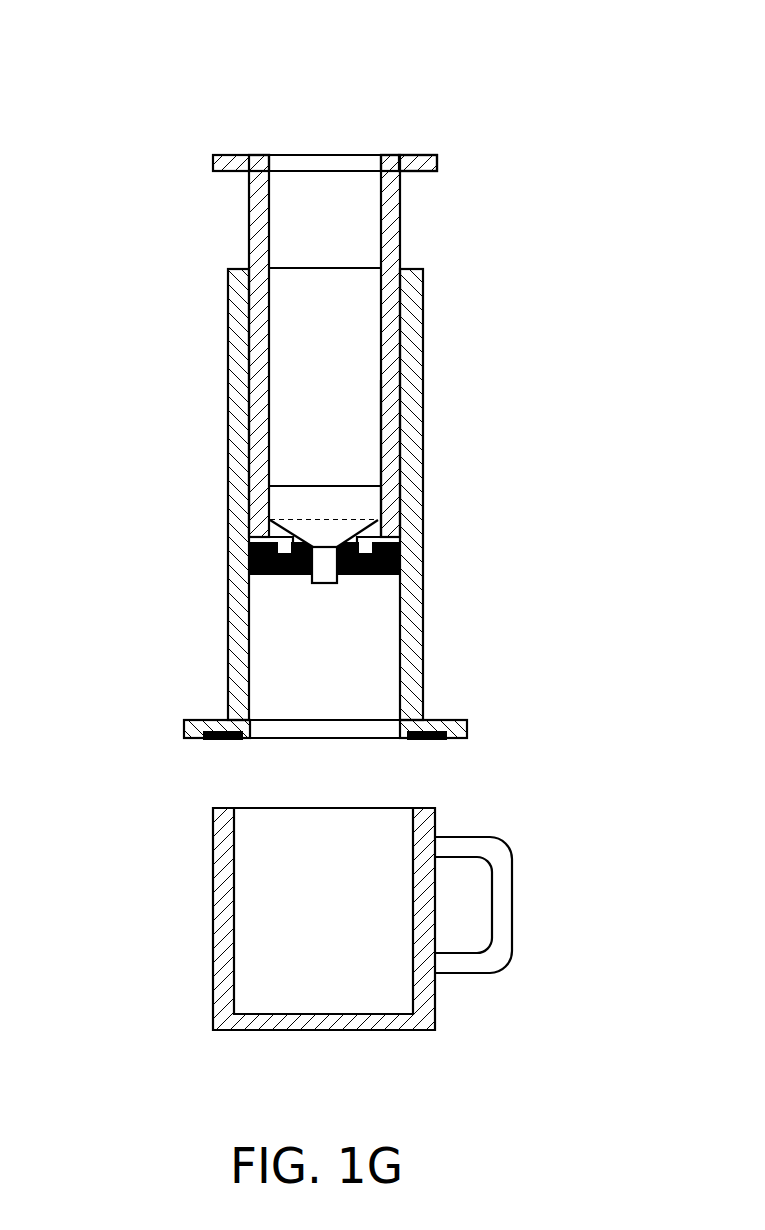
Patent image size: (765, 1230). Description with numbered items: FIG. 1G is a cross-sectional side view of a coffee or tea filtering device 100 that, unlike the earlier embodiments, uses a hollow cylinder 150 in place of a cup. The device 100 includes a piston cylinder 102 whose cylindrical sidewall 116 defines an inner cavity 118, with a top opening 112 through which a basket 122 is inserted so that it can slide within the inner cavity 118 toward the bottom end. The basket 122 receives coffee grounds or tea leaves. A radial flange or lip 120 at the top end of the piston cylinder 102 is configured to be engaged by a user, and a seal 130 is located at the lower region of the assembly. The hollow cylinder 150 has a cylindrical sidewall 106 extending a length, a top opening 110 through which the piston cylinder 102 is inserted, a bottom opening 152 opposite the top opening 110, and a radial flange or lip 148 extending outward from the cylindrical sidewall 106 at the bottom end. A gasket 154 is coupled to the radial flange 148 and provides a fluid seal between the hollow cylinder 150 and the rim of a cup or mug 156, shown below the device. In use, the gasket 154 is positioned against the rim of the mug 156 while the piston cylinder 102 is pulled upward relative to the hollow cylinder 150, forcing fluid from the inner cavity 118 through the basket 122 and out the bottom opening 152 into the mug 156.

The coffee or tea filtering device 100 is at (355, 409).
The piston cylinder 102 is at (266, 327).
The cylindrical sidewall 106 is at (412, 348).
The top opening 110 is at (358, 263).
The top opening 112 is at (320, 155).
The cylindrical sidewall 116 is at (388, 436).
The inner cavity 118 is at (352, 382).
The radial flange or lip 120 is at (416, 158).
The basket 122 is at (318, 484).
The seal 130 is at (282, 577).
The radial flange or lip 148 is at (460, 730).
The hollow cylinder 150 is at (237, 347).
The bottom opening 152 is at (297, 740).
The gasket 154 is at (430, 740).
The cup or mug 156 is at (212, 897).